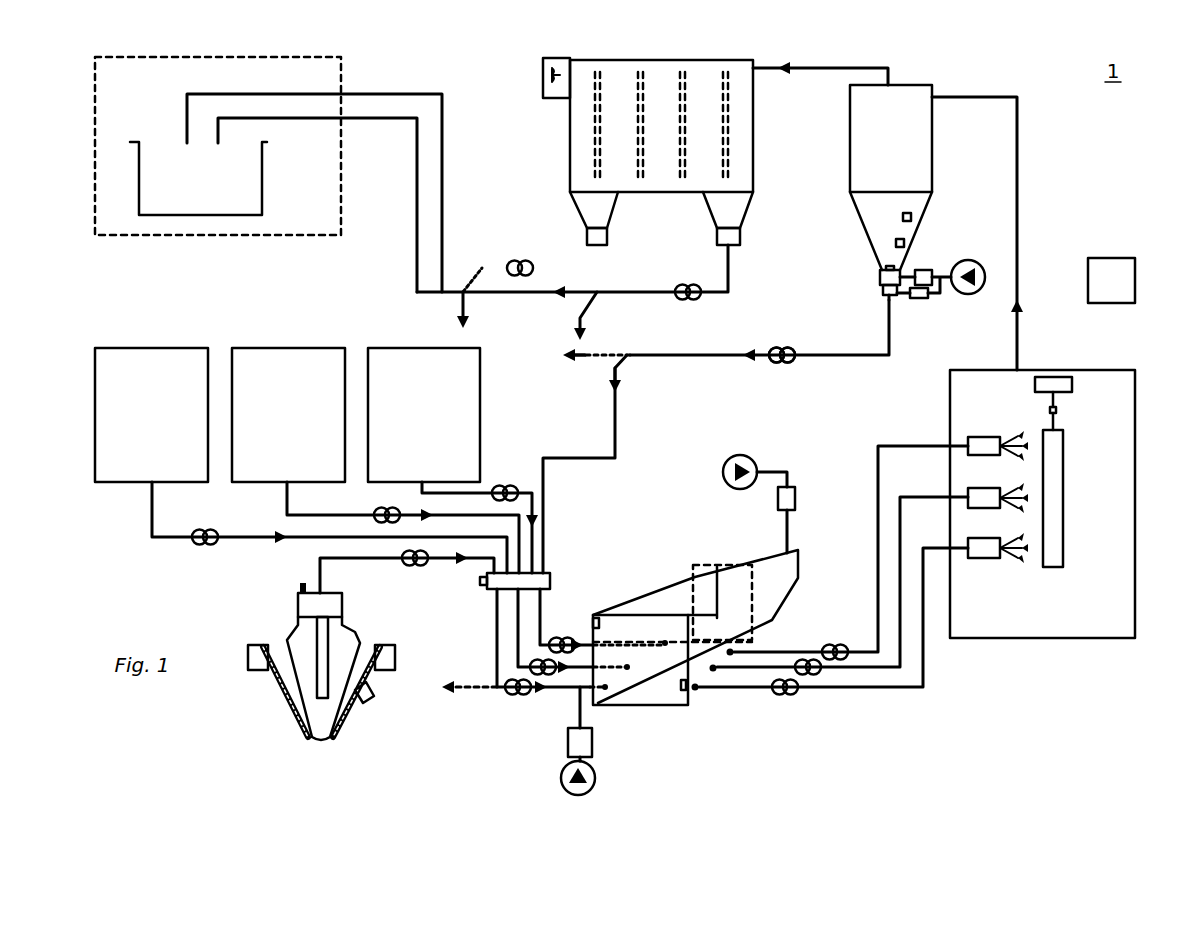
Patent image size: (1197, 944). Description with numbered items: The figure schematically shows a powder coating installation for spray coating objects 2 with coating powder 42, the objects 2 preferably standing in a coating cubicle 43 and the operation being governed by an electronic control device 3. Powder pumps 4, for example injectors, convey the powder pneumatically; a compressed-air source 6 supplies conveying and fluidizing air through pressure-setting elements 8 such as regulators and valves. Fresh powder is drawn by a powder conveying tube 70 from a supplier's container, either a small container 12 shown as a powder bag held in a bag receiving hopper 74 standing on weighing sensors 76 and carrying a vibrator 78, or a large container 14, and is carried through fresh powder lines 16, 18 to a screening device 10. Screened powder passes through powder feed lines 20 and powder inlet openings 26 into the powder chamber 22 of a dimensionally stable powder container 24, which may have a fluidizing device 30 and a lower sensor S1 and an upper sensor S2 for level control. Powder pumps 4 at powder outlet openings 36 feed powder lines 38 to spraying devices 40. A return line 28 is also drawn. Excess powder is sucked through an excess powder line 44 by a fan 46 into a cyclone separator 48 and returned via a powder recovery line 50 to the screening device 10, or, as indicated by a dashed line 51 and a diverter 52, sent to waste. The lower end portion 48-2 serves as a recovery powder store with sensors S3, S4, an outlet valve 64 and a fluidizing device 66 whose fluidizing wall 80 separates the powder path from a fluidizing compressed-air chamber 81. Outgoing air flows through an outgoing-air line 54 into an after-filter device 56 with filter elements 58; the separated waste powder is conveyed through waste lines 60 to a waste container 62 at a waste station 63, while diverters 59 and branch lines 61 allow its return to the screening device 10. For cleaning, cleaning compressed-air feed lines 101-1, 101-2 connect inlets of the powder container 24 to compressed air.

The object 2 is at (1064, 520).
The electronic control device 3 is at (1118, 262).
The powder pump 4 is at (522, 262).
The compressed-air source 6 is at (976, 263).
The pressure-setting element 8 is at (924, 270).
The screening device 10 is at (551, 576).
The small container 12 is at (290, 633).
The large container 14 is at (155, 348).
The fresh powder line 16 is at (455, 562).
The fresh powder line 18 is at (286, 511).
The powder feed line 20 is at (492, 635).
The powder chamber 22 is at (650, 600).
The powder container 24 is at (620, 620).
The powder inlet opening 26 is at (666, 640).
The return line 28 is at (470, 698).
The fluidizing device 30 is at (702, 567).
The powder outlet opening 36 is at (735, 650).
The powder line 38 is at (905, 445).
The spraying device 40 is at (985, 440).
The coating powder 42 is at (1012, 436).
The coating cubicle 43 is at (1135, 383).
The excess powder line 44 is at (1020, 258).
The fan 46 is at (560, 68).
The cyclone separator 48 is at (915, 95).
The lower end portion 48-2 is at (870, 215).
The powder recovery line 50 is at (706, 357).
The dashed line 51 is at (580, 362).
The diverter 52 is at (626, 362).
The outgoing-air line 54 is at (815, 68).
The after-filter device 56 is at (660, 68).
The filter element 58 is at (600, 75).
The diverter 59 is at (472, 282).
The waste line 60 is at (393, 93).
The branch line 61 is at (458, 305).
The waste container 62 is at (160, 214).
The waste station 63 is at (255, 57).
The outlet valve 64 is at (886, 298).
The fluidizing device 66 is at (884, 291).
The powder conveying tube 70 is at (317, 660).
The bag receiving hopper 74 is at (292, 718).
The weighing sensor 76 is at (253, 672).
The vibrator 78 is at (366, 702).
The fluidizing wall 80 is at (880, 270).
The fluidizing compressed-air chamber 81 is at (880, 277).
The cleaning compressed-air feed line 101-1 is at (582, 695).
The cleaning compressed-air feed line 101-2 is at (565, 700).
The lower sensor S1 is at (680, 690).
The upper sensor S2 is at (599, 617).
The sensor S3 is at (910, 215).
The sensor S4 is at (903, 243).